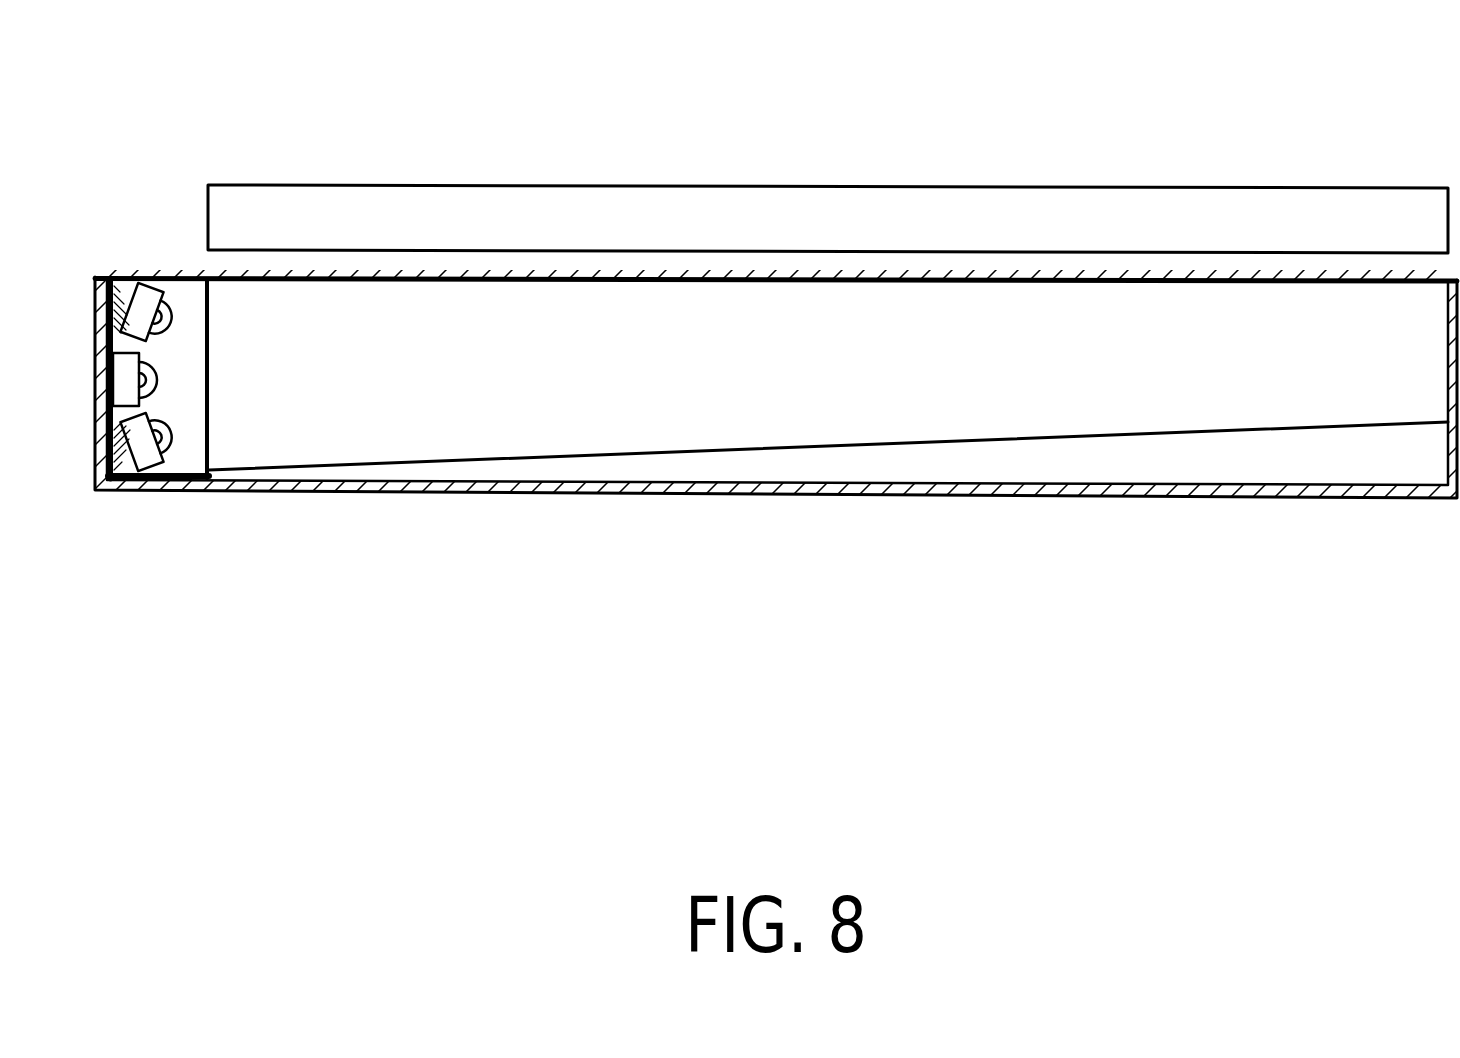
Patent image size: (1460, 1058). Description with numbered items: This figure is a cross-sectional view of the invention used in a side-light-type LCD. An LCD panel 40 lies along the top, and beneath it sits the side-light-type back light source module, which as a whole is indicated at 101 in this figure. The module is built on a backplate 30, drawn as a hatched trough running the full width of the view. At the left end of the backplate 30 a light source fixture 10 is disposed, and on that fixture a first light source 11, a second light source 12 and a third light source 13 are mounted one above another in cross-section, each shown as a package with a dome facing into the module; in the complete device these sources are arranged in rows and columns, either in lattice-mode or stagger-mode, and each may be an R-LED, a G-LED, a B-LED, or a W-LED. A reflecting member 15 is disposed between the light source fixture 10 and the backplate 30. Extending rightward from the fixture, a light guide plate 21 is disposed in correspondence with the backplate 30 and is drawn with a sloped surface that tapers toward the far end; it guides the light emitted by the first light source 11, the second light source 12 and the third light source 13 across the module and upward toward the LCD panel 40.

The backlight module 101 is at (312, 703).
The light source fixture 10 is at (222, 472).
The first light source 11 is at (140, 383).
The second light source 12 is at (181, 303).
The third light source 13 is at (179, 457).
The reflecting member 15 is at (157, 478).
The light guide plate 21 is at (905, 392).
The backplate 30 is at (517, 495).
The LCD panel 40 is at (997, 220).